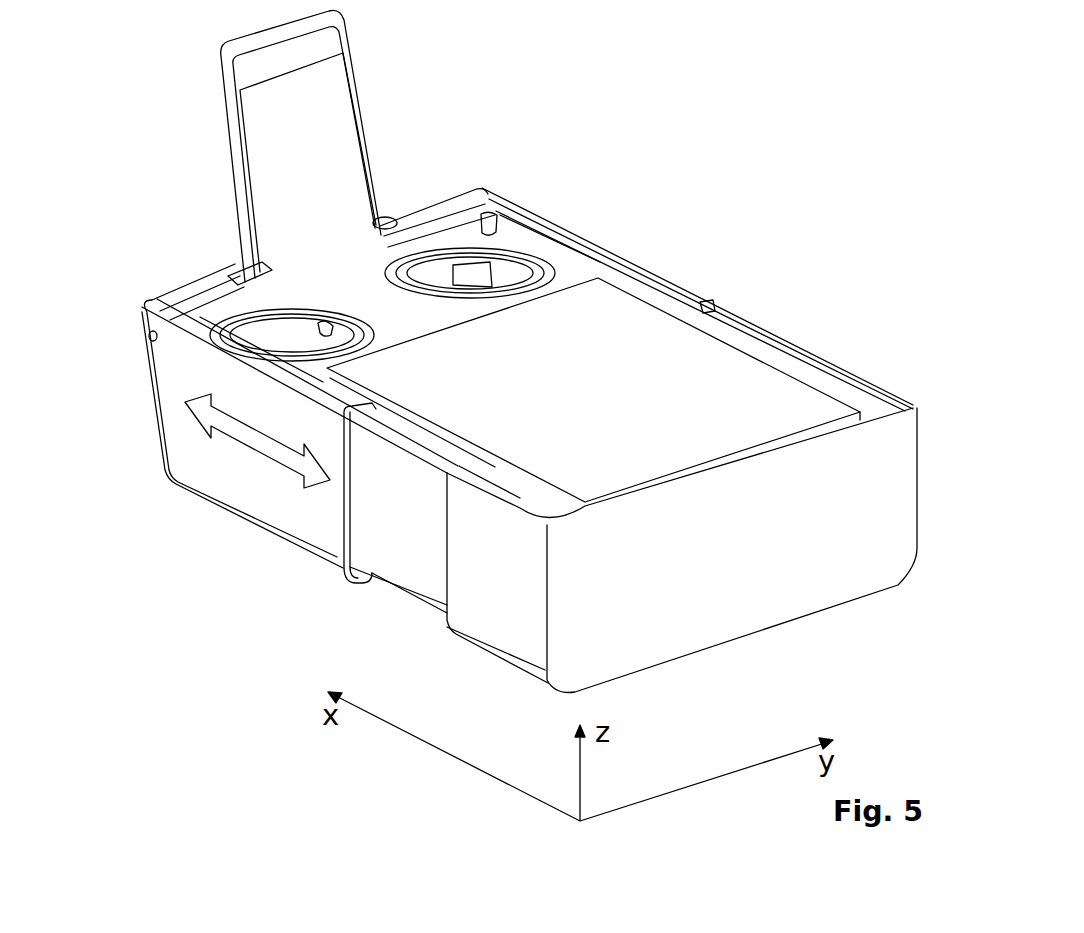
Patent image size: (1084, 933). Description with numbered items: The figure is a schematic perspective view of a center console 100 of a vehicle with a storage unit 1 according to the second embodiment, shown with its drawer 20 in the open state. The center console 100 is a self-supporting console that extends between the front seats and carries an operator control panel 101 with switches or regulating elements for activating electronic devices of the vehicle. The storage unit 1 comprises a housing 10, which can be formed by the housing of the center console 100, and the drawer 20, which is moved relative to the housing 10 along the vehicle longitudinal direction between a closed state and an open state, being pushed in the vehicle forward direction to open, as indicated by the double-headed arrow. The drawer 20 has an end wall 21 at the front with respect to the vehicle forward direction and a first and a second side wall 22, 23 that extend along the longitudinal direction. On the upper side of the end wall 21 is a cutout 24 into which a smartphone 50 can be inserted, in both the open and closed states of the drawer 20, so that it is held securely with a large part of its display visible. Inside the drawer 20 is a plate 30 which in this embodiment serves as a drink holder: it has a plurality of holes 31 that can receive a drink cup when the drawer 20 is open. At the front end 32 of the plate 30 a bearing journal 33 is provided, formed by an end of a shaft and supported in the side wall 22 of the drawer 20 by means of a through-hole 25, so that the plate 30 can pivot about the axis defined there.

The storage unit 1 is at (168, 546).
The housing 10 is at (705, 645).
The drawer 20 is at (310, 522).
The end wall 21 is at (182, 295).
The first side wall 22 is at (178, 413).
The second side wall 23 is at (620, 250).
The cutout 24 is at (262, 293).
The through-hole 25 is at (148, 345).
The plate 30 is at (372, 253).
The holes 31 is at (453, 283).
The front end 32 is at (283, 305).
The bearing journal 33 is at (494, 214).
The smartphone 50 is at (330, 94).
The center console 100 is at (862, 332).
The operator control panel 101 is at (650, 363).